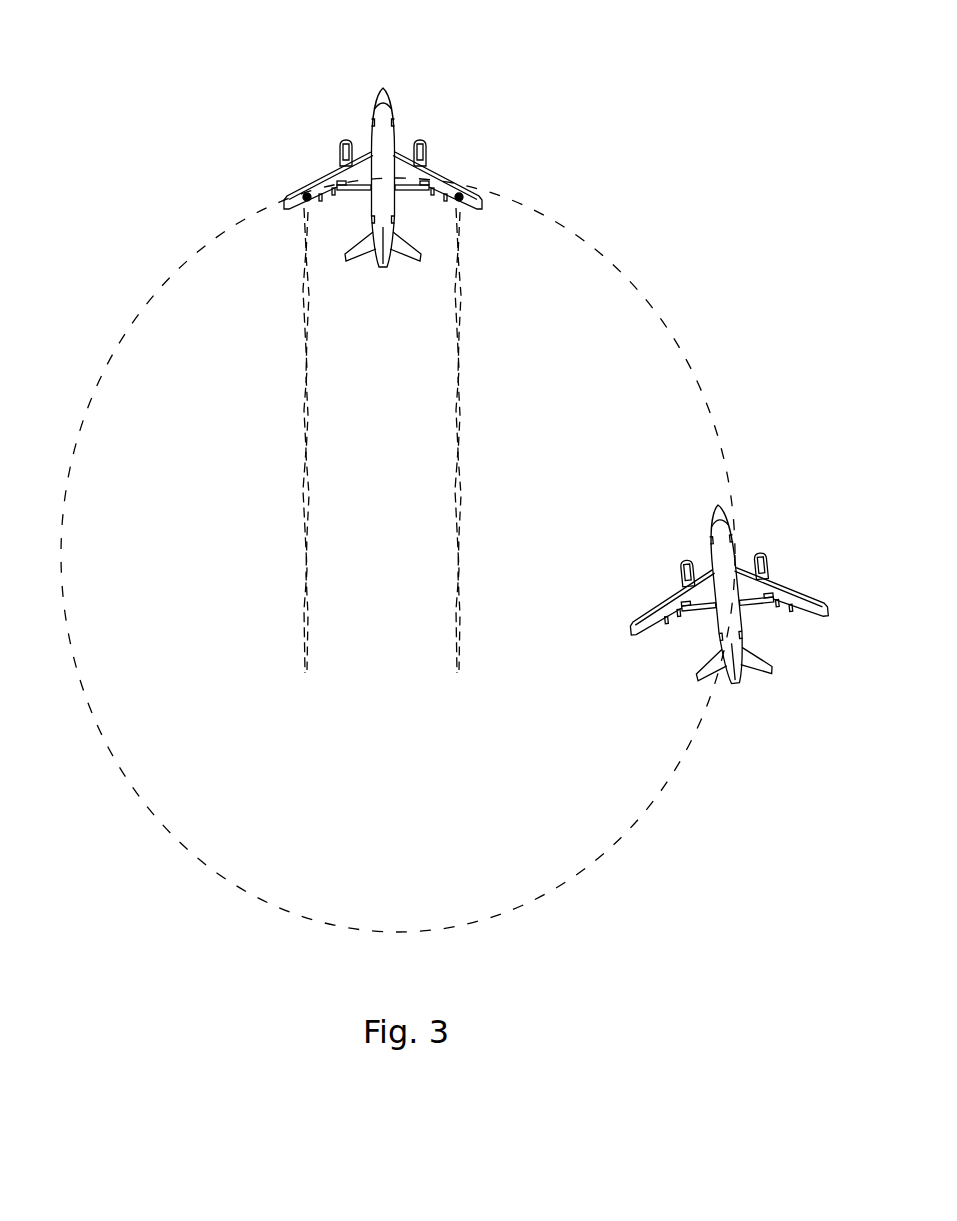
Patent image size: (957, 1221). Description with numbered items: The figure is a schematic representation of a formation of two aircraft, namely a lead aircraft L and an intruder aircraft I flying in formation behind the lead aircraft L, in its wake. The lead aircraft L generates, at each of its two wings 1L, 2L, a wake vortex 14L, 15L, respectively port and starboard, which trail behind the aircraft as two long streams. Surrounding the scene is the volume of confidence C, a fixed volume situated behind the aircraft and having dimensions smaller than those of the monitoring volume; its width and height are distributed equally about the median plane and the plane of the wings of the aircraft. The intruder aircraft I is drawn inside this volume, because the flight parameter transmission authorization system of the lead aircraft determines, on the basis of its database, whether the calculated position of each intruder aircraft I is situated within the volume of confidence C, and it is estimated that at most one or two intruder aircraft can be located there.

The lead aircraft L is at (421, 138).
The wing 1L is at (323, 171).
The wing 2L is at (432, 169).
The wake vortex 14L is at (305, 358).
The wake vortex 15L is at (458, 349).
The volume of confidence C is at (648, 305).
The intruder aircraft I is at (730, 523).